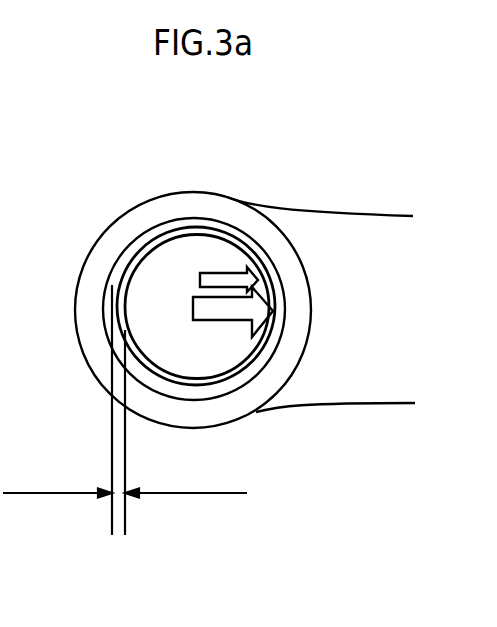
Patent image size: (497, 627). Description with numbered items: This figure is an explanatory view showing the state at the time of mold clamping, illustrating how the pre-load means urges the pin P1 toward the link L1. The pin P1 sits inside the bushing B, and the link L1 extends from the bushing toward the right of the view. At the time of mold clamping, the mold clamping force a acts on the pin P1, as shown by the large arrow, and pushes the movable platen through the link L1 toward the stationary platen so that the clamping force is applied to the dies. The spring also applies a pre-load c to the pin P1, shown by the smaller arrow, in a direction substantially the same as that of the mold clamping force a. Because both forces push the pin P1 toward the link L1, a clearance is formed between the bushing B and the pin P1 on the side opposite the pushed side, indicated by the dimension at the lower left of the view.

The link L1 is at (328, 232).
The bushing B is at (106, 300).
The pin P1 is at (168, 258).
The pre-load c is at (218, 272).
The mold clamping force a is at (218, 316).